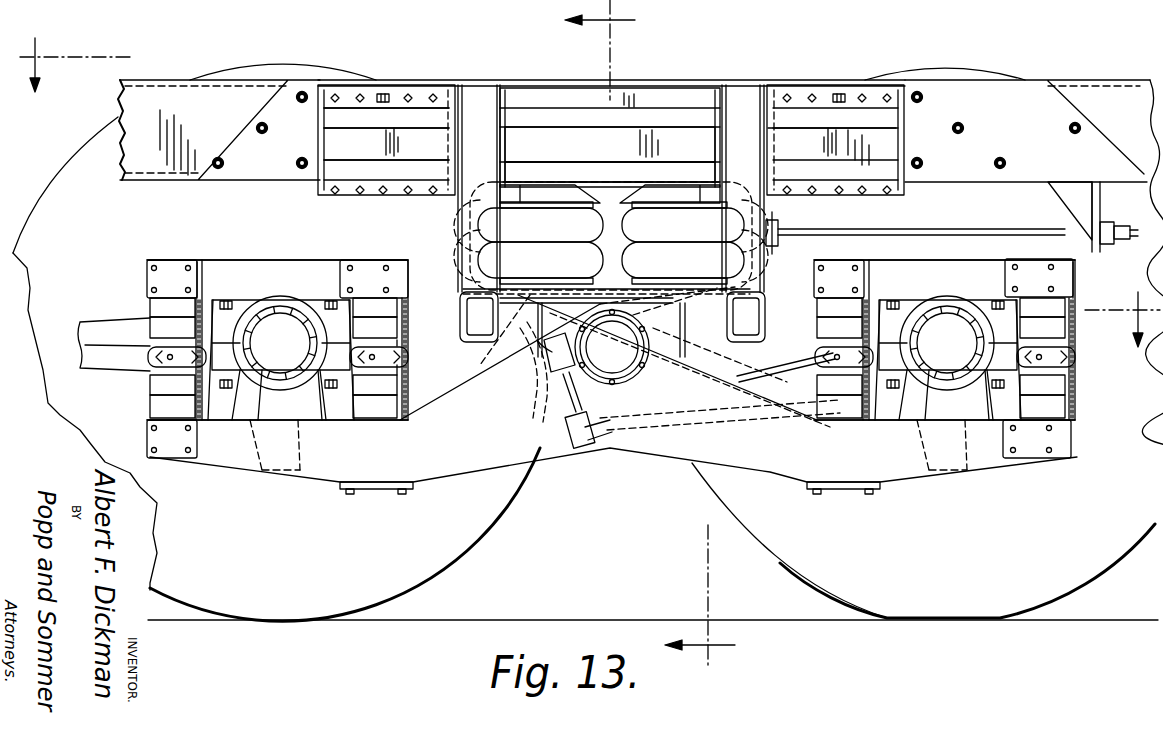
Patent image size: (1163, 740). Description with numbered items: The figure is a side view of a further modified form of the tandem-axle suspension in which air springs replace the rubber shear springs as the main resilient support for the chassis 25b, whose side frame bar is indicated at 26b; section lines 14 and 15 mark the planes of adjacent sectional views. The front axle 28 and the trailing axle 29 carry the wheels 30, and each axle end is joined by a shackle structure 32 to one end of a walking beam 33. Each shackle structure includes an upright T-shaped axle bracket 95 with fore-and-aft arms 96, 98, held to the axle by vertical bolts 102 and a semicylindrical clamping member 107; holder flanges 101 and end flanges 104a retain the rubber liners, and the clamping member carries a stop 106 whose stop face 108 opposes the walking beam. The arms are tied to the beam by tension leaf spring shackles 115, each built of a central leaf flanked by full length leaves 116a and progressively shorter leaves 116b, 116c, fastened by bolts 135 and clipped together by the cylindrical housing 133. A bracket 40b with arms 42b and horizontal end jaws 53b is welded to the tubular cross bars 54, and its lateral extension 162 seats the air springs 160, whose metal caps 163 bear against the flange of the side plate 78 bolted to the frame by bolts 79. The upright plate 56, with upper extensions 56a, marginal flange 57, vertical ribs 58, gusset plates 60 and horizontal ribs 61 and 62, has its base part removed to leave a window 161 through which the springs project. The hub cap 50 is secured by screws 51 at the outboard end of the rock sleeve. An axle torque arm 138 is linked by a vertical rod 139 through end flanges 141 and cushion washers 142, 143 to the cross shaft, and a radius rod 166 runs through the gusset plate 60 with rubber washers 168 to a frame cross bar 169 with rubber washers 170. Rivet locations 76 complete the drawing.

The section line 14- 14 is at (582, 177).
The section line 15- 15 is at (655, 334).
The chassis 25b is at (185, 50).
The side plate 26b is at (1128, 80).
The front axle 28 is at (298, 343).
The trailing axle 29 is at (960, 355).
The wheels 30 is at (448, 575).
The shackle structure 32 is at (138, 305).
The walking beam 33 is at (445, 490).
The bracket 40b is at (703, 366).
The arms 42b is at (540, 368).
The hub cap 50 is at (626, 358).
The screws 51 is at (626, 339).
The horizontal end jaws 53b is at (458, 360).
The cross bars 54 is at (493, 332).
The upright plate 56 is at (685, 97).
The upper extensions 56a is at (324, 140).
The marginal flange 57 is at (410, 86).
The vertical ribs 58 is at (484, 86).
The gusset plate 60 is at (467, 255).
The horizontal ribs 61 is at (368, 126).
The horizontal ribs 62 is at (579, 123).
The rivets 76 is at (360, 94).
The side plate 78 is at (302, 92).
The bolts 79 is at (262, 123).
The axle bracket 95 is at (300, 240).
The arm 96 is at (210, 256).
The arm 98 is at (372, 264).
The flanges 101 is at (285, 300).
The vertical bolts 102 is at (227, 300).
The end flanges 104a is at (995, 423).
The stop 106 is at (304, 470).
The clamping member 107 is at (250, 402).
The stop face 108 is at (270, 420).
The leaf spring shackle 115 is at (143, 407).
The full length spring leaves 116a is at (408, 370).
The spring leaves 116b is at (375, 356).
The spring leaves 116c is at (375, 358).
The cylindrical housing 133 is at (146, 355).
The bolts 135 is at (163, 260).
The axle torque arm 138 is at (85, 332).
The rod 139 is at (580, 382).
The end flanges 141 is at (540, 405).
The rubber cushion washers 142 is at (560, 442).
The cushion washers 143 is at (540, 425).
The air springs 160 is at (585, 235).
The window 161 is at (633, 178).
The lateral extension 162 is at (665, 247).
The metal cap 163 is at (548, 182).
The radius rod 166 is at (1045, 218).
The rubber washers 168 is at (775, 215).
The frame cross bar 169 is at (1085, 172).
The rubber washers 170 is at (1104, 224).